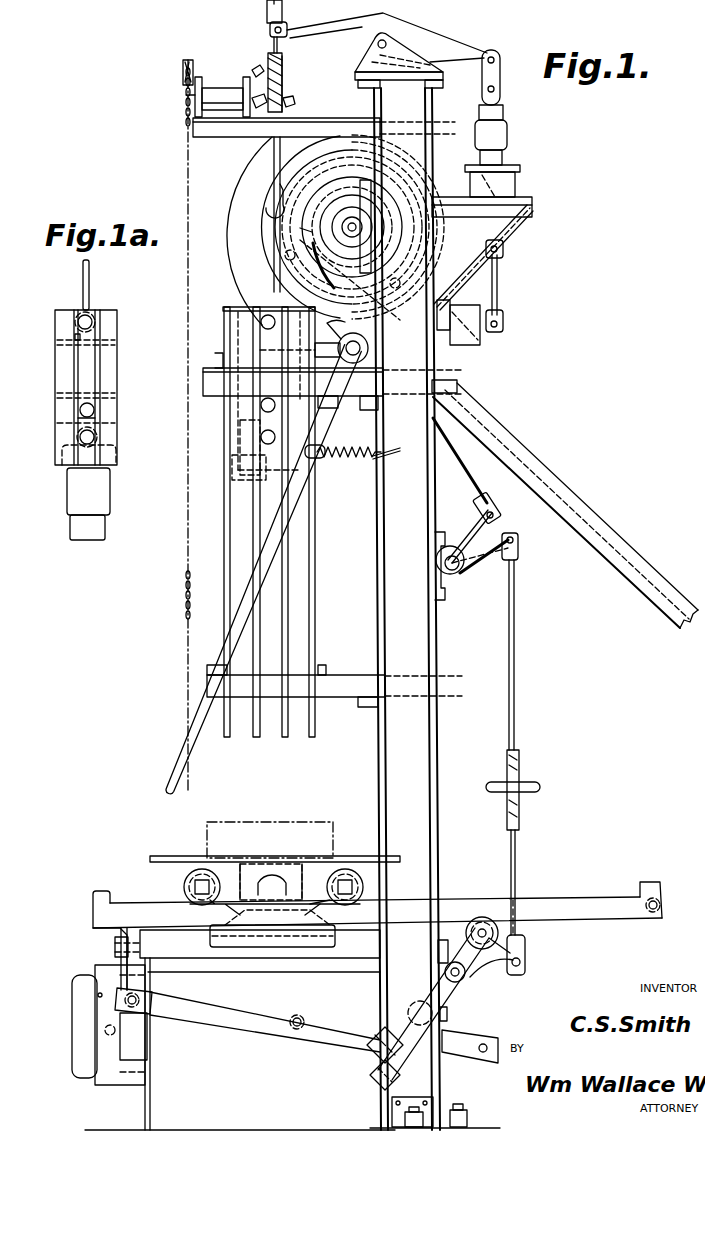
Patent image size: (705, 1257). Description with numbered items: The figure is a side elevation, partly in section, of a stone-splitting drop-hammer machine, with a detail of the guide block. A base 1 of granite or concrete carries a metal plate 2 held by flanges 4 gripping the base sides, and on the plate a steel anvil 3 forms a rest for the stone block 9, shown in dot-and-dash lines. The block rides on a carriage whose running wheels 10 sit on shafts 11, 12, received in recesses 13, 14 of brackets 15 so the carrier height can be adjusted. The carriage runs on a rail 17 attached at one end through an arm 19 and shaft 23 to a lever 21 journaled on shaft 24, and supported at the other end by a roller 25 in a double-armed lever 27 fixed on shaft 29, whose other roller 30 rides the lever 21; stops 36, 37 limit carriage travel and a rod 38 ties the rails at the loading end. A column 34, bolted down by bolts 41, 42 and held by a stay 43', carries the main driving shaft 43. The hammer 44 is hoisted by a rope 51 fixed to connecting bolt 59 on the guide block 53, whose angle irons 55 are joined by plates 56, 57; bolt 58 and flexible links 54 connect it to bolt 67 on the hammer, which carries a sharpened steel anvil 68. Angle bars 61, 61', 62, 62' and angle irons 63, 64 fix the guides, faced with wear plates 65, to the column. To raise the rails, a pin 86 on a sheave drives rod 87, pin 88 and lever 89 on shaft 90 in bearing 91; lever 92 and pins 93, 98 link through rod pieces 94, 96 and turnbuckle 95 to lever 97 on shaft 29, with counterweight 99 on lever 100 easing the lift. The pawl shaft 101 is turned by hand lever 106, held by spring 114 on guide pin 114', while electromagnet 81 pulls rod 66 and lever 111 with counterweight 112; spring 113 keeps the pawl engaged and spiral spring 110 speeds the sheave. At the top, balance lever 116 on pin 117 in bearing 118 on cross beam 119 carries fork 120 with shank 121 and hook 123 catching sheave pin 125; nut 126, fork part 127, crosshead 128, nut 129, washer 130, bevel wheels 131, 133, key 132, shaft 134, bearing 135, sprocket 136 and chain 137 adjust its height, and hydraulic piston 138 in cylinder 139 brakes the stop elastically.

In FIG. 1, the base 1 is at (233, 1029).
In FIG. 1, the plate 2 is at (335, 935).
In FIG. 1, the steel anvil 3 is at (270, 880).
In FIG. 1, the flanges 4 is at (212, 938).
In FIG. 1, the block of stone 9 is at (322, 822).
In FIG. 1, the running wheels 10 is at (190, 874).
In FIG. 1, the shaft 11 is at (195, 886).
In FIG. 1, the shaft 12 is at (352, 884).
In FIG. 1, the recess 13 is at (225, 906).
In FIG. 1, the recess 14 is at (335, 902).
In FIG. 1, the brackets 15 is at (232, 878).
In FIG. 1, the rail 17 is at (128, 908).
In FIG. 1, the arm 19 is at (115, 946).
In FIG. 1, the lever 21 is at (242, 1005).
In FIG. 1, the shaft 23 is at (155, 996).
In FIG. 1, the shaft 24 is at (301, 1016).
In FIG. 1, the roller 25 is at (478, 917).
In FIG. 1, the double-armed lever 27 is at (478, 968).
In FIG. 1, the shaft 29 is at (462, 980).
In FIG. 1, the roller 30 is at (447, 1015).
In FIG. 1, the column 34 is at (400, 765).
In FIG. 1, the stop 36 is at (108, 890).
In FIG. 1, the stop 37 is at (438, 956).
In FIG. 1, the rod 38 is at (662, 906).
In FIG. 1, the bolt 41 is at (405, 1120).
In FIG. 1, the bolt 42 is at (462, 1108).
In FIG. 1, the main driving shaft 43 is at (385, 221).
In FIG. 1, the stay 43' is at (565, 504).
In FIG. 1, the hammer 44 is at (255, 458).
In FIG. 1A, the hammer 44 is at (100, 490).
In FIG. 1A, the rope 51 is at (89, 282).
In FIG. 1A, the guide block 53 is at (100, 357).
In FIG. 1A, the flexible links 54 is at (98, 430).
In FIG. 1A, the angle irons 55 is at (60, 378).
In FIG. 1A, the lower plate 56 is at (100, 400).
In FIG. 1A, the upper plate 57 is at (74, 336).
In FIG. 1A, the bolt 58 is at (79, 410).
In FIG. 1A, the connecting bolt 59 is at (95, 322).
In FIG. 1, the angle bar 61 is at (334, 673).
In FIG. 1, the angle bar 61' is at (361, 711).
In FIG. 1, the angle bar 62 is at (311, 383).
In FIG. 1, the angle bar 62' is at (360, 416).
In FIG. 1, the angle iron 63 is at (322, 665).
In FIG. 1, the angle iron 64 is at (343, 407).
In FIG. 1, the wear plates 65 is at (258, 625).
In FIG. 1, the rod 66 is at (498, 292).
In FIG. 1A, the bolt 67 is at (75, 443).
In FIG. 1A, the steel anvil 68 is at (75, 530).
In FIG. 1, the electromagnet 81 is at (515, 186).
In FIG. 1, the pin 86 is at (320, 263).
In FIG. 1, the rod 87 is at (468, 486).
In FIG. 1, the pin 88 is at (498, 512).
In FIG. 1, the lever 89 is at (478, 525).
In FIG. 1, the shaft 90 is at (455, 570).
In FIG. 1, the bearing 91 is at (444, 600).
In FIG. 1, the lever 92 is at (486, 560).
In FIG. 1, the pin 93 is at (520, 543).
In FIG. 1, the rod piece 94 is at (515, 660).
In FIG. 1, the turnbuckle with hand wheel 95 is at (540, 785).
In FIG. 1, the rod piece 96 is at (518, 852).
In FIG. 1, the lever 97 is at (505, 976).
In FIG. 1, the pin 98 is at (522, 958).
In FIG. 1, the counterweight 99 is at (370, 1050).
In FIG. 1, the lever 100 is at (372, 1078).
In FIG. 1, the shaft 101 is at (368, 352).
In FIG. 1, the hand lever 106 is at (185, 735).
In FIG. 1, the spiral spring 110 is at (365, 170).
In FIG. 1, the lever 111 is at (448, 312).
In FIG. 1, the counterweight 112 is at (480, 343).
In FIG. 1, the spring 113 is at (300, 351).
In FIG. 1, the spring 114 is at (343, 468).
In FIG. 1, the guide pin 114' is at (398, 444).
In FIG. 1, the balance lever 116 is at (437, 37).
In FIG. 1, the pin 117 is at (392, 44).
In FIG. 1, the bearing 118 is at (368, 68).
In FIG. 1, the cross beam 119 is at (372, 92).
In FIG. 1, the fork 120 is at (278, 152).
In FIG. 1, the shank 121 is at (278, 180).
In FIG. 1, the hook 123 is at (266, 216).
In FIG. 1, the pin 125 is at (354, 280).
In FIG. 1, the nut 126 is at (283, 72).
In FIG. 1, the upper fork part 127 is at (273, 46).
In FIG. 1, the crosshead 128 is at (269, 30).
In FIG. 1, the nut 129 is at (266, 4).
In FIG. 1, the hard rubber washer 130 is at (283, 14).
In FIG. 1, the bevel wheel 131 is at (296, 104).
In FIG. 1, the key 132 is at (268, 62).
In FIG. 1, the bevel wheel 133 is at (252, 98).
In FIG. 1, the shaft 134 is at (218, 84).
In FIG. 1, the bearing 135 is at (186, 106).
In FIG. 1, the sprocket wheel 136 is at (183, 78).
In FIG. 1, the chain 137 is at (186, 138).
In FIG. 1, the hydraulic piston 138 is at (501, 103).
In FIG. 1, the cylinder 139 is at (515, 168).